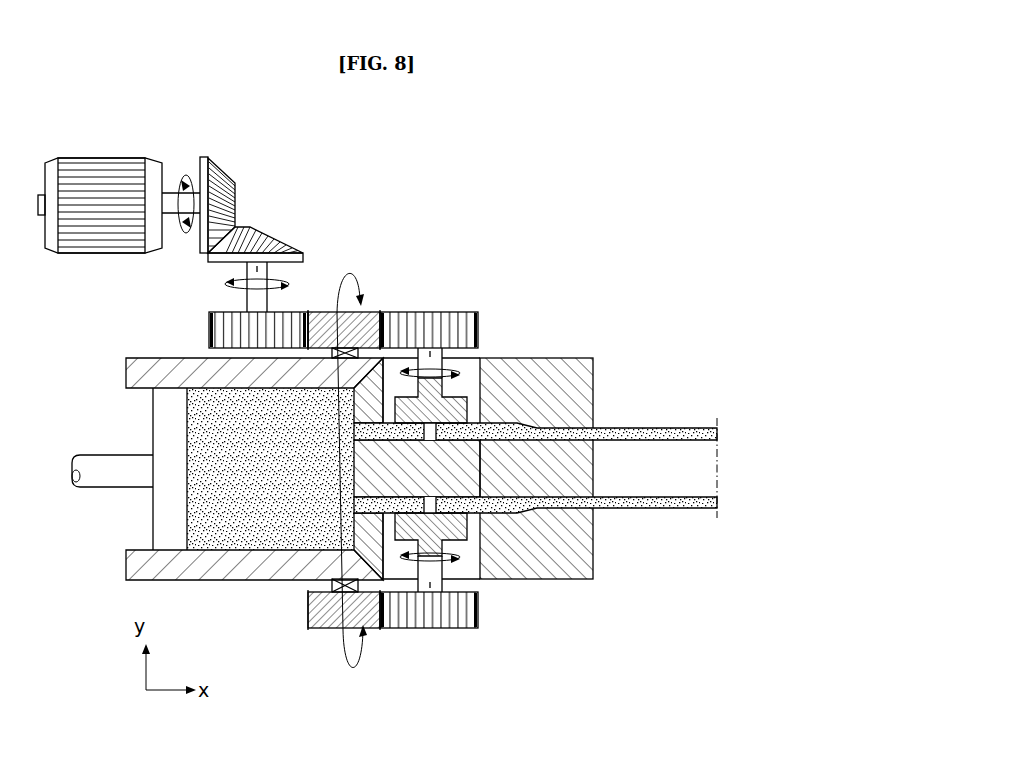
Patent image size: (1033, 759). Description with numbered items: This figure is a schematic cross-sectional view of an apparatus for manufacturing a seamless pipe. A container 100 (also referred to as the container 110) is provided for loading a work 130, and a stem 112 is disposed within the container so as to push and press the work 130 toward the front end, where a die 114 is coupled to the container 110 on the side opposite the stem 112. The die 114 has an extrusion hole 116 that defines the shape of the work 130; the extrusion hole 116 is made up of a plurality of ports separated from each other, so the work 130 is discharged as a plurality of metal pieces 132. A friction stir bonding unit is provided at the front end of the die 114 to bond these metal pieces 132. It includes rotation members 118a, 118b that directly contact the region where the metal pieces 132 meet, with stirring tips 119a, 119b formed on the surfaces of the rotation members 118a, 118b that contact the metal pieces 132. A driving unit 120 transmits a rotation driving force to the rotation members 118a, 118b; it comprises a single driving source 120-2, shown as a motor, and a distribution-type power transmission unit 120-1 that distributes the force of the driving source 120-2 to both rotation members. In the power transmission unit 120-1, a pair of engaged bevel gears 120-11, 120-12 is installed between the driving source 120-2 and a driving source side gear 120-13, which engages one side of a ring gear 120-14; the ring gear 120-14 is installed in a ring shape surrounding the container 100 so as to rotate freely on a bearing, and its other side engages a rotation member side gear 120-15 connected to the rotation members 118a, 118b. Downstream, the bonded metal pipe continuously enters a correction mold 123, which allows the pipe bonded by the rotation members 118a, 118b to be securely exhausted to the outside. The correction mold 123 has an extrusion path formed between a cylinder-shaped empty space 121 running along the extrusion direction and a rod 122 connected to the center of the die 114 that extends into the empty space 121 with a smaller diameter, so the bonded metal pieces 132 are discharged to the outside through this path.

The container 100 is at (536, 611).
The container 110 is at (165, 357).
The stem 112 is at (102, 482).
The die 114 is at (377, 570).
The extrusion hole 116 is at (385, 520).
The rotation member 118a is at (463, 403).
The rotation member 118b is at (465, 530).
The stirring tip 119a is at (468, 443).
The stirring tip 119b is at (440, 513).
The driving unit 120 is at (585, 98).
The distribution-type power transmission unit 120-1 is at (498, 142).
The single driving source 120-2 is at (135, 160).
The bevel gear 120-11 is at (237, 197).
The bevel gear 120-12 is at (293, 235).
The driving source side gear 120-13 is at (285, 313).
The ring gear 120-14 is at (368, 312).
The rotation member side gear 120-15 is at (407, 317).
The empty space 121 is at (513, 435).
The shaft rod 122 is at (587, 477).
The correction mold 123 is at (585, 547).
The work 130 is at (221, 538).
The metal pieces 132 is at (395, 515).